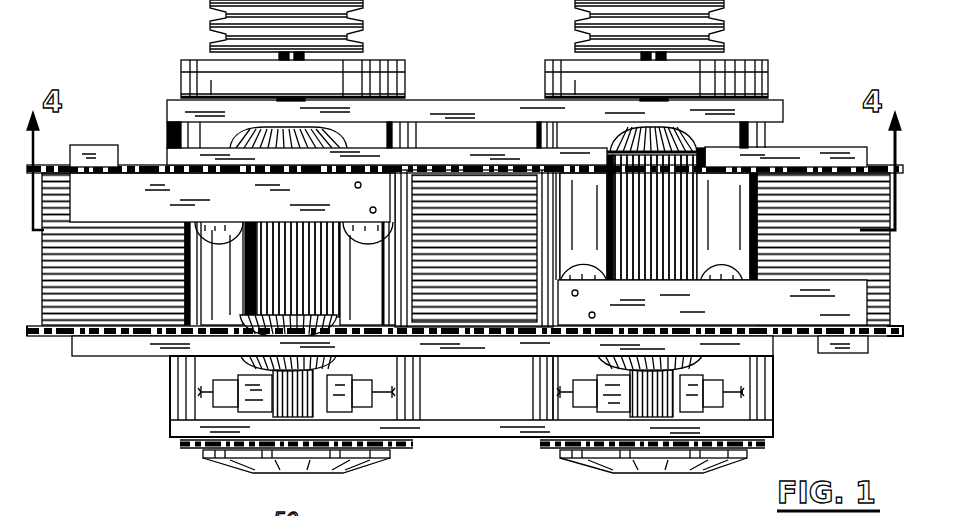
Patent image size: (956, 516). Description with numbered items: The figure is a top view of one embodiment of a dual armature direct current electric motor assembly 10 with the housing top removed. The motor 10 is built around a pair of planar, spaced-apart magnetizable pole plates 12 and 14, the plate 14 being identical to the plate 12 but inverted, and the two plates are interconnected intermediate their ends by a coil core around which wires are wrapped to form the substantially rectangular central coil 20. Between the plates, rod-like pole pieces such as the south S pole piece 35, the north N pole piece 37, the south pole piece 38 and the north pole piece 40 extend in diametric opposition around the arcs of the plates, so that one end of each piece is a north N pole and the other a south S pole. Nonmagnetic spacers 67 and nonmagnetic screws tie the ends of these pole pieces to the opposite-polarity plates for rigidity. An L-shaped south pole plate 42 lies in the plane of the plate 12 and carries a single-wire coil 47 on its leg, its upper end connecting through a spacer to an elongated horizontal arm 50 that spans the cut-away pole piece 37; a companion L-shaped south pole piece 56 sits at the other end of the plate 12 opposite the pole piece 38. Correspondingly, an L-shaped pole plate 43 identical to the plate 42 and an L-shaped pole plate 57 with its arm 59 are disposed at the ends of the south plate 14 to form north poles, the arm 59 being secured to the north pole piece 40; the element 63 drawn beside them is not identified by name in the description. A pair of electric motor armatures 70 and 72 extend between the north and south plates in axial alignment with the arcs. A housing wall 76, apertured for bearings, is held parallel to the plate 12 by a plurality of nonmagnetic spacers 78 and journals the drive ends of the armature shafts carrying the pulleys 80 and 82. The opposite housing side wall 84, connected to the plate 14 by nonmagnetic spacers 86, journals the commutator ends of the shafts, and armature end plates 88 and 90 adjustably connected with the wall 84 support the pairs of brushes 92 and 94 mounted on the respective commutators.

The dual armature direct current electric motor assembly 10 is at (769, 27).
The pole plate 12 is at (445, 146).
The pole plate 14 is at (467, 356).
The coil 20 is at (437, 313).
The pole piece 35 is at (347, 240).
The pole piece 37 is at (203, 250).
The pole piece 38 is at (735, 280).
The pole piece 40 is at (586, 262).
The L-shaped pole plate 42 is at (104, 143).
The L-shaped pole plate 43 is at (128, 354).
The coil 47 is at (52, 340).
The horizontal arm 50 is at (121, 201).
The L-shaped pole piece 56 is at (847, 146).
The L-shaped pole plate 57 is at (824, 356).
The arm 59 is at (787, 313).
The right rail end 63 is at (886, 340).
The nonmagnetic spacers 67 is at (371, 170).
The electric motor armature 70 is at (688, 280).
The electric motor armature 72 is at (272, 228).
The housing wall 76 is at (412, 80).
The nonmagnetic spacers 78 is at (167, 133).
The pulley 80 is at (580, 27).
The pulley 82 is at (364, 26).
The housing side wall 84 is at (497, 438).
The nonmagnetic spacers 86 is at (172, 395).
The armature end plate 88 is at (636, 474).
The armature end plate 90 is at (257, 465).
The brushes 92 is at (603, 390).
The brushes 94 is at (240, 386).
The north pole N is at (486, 146).
The south pole S is at (80, 144).